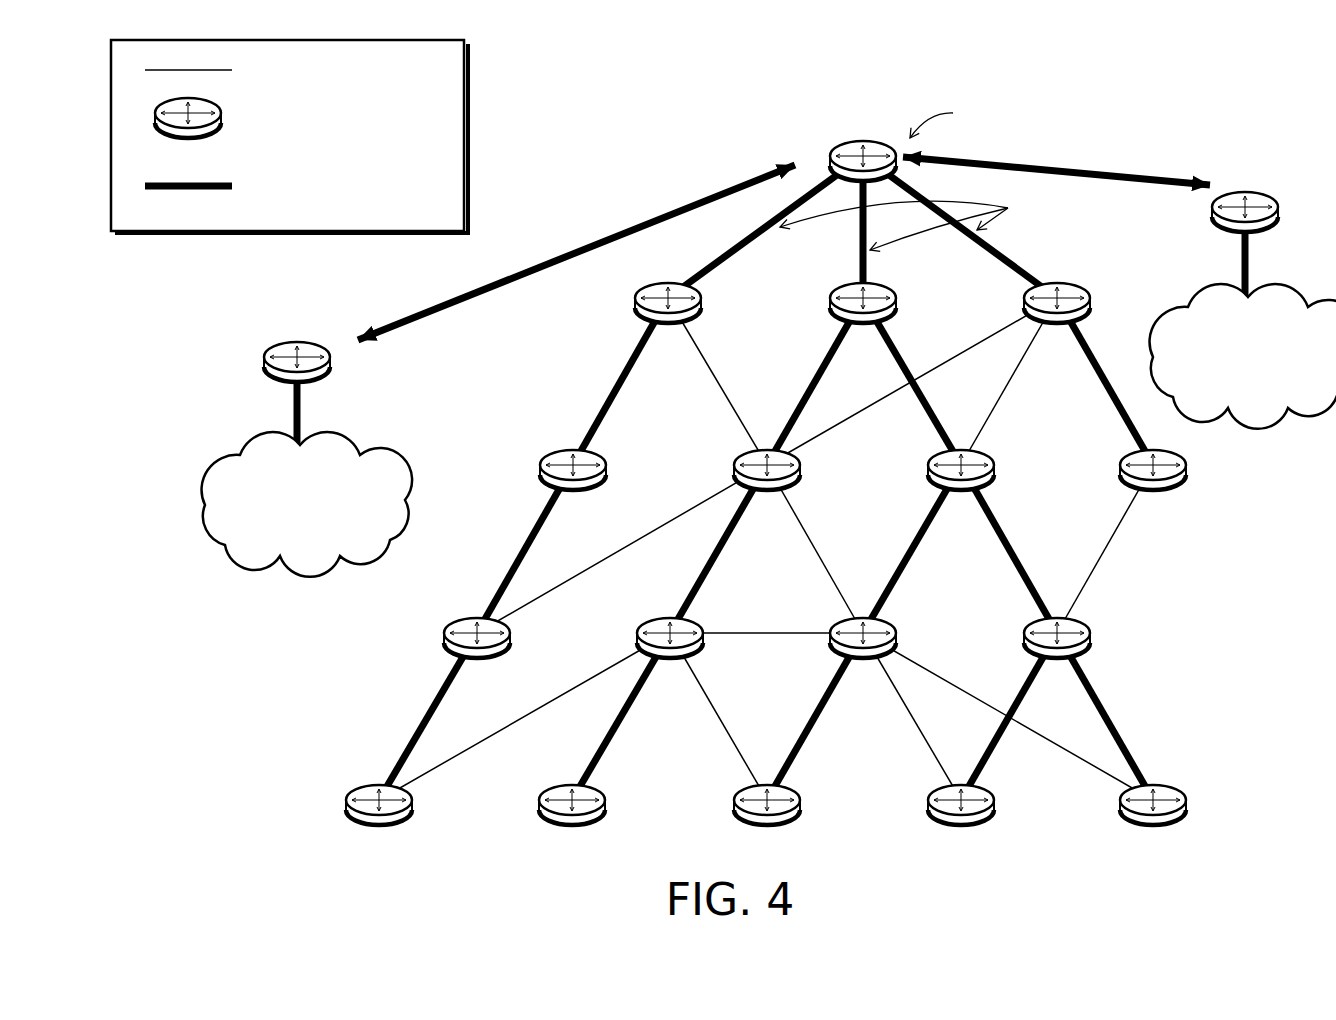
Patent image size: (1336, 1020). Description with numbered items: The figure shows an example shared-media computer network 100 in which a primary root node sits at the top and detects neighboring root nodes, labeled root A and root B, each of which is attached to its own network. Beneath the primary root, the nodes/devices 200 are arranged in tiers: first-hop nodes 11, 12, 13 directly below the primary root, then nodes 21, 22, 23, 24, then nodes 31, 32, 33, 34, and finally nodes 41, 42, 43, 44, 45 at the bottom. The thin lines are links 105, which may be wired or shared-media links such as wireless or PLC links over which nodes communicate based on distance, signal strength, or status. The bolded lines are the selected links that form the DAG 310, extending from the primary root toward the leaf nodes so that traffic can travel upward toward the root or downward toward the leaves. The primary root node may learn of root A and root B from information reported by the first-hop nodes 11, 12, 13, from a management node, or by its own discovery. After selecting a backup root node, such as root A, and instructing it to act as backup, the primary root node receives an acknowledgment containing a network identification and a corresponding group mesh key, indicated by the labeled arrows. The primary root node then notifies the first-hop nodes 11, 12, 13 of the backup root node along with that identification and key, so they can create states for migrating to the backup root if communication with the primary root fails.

The computer network 100 is at (1247, 100).
The links 105 is at (649, 429).
The nodes/devices 200 is at (269, 118).
The DAG 310 is at (649, 478).
The node 11 is at (668, 322).
The node 12 is at (863, 322).
The node 13 is at (1057, 322).
The node 21 is at (573, 489).
The node 22 is at (767, 489).
The node 23 is at (961, 489).
The node 24 is at (1153, 489).
The node 31 is at (477, 657).
The node 32 is at (670, 657).
The node 33 is at (863, 657).
The node 34 is at (1057, 657).
The node 41 is at (379, 824).
The node 42 is at (572, 824).
The node 43 is at (767, 824).
The node 44 is at (961, 824).
The node 45 is at (1153, 824).